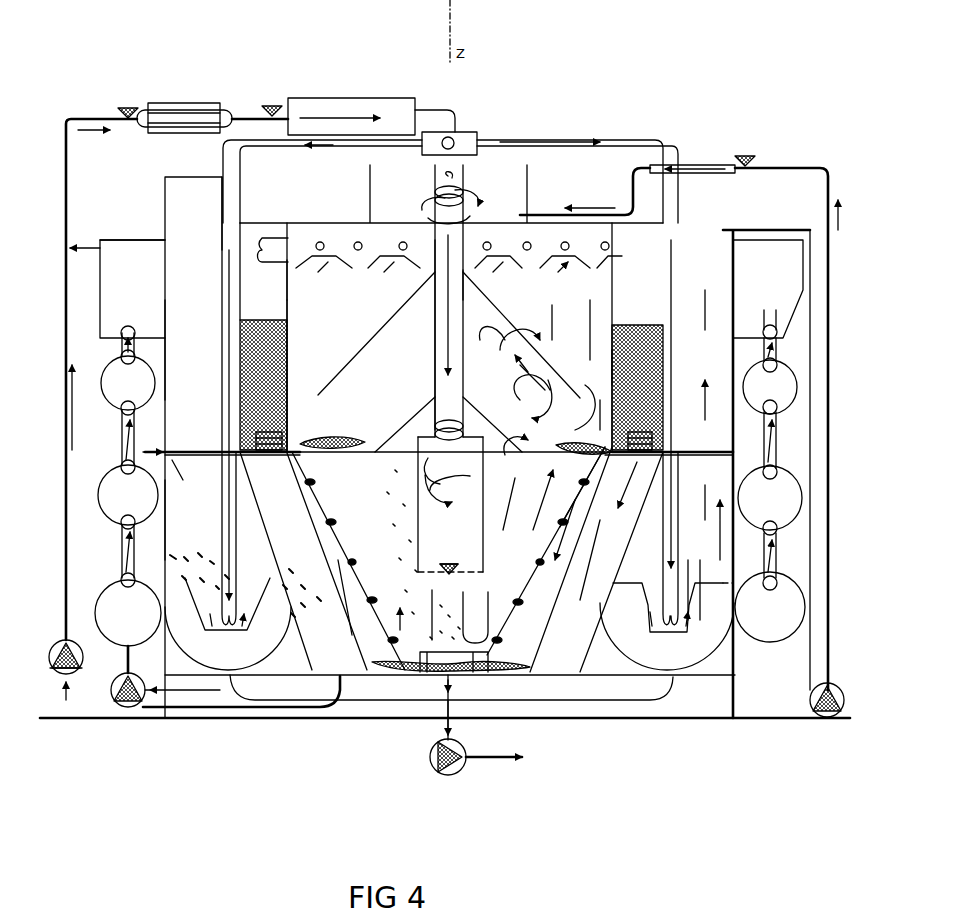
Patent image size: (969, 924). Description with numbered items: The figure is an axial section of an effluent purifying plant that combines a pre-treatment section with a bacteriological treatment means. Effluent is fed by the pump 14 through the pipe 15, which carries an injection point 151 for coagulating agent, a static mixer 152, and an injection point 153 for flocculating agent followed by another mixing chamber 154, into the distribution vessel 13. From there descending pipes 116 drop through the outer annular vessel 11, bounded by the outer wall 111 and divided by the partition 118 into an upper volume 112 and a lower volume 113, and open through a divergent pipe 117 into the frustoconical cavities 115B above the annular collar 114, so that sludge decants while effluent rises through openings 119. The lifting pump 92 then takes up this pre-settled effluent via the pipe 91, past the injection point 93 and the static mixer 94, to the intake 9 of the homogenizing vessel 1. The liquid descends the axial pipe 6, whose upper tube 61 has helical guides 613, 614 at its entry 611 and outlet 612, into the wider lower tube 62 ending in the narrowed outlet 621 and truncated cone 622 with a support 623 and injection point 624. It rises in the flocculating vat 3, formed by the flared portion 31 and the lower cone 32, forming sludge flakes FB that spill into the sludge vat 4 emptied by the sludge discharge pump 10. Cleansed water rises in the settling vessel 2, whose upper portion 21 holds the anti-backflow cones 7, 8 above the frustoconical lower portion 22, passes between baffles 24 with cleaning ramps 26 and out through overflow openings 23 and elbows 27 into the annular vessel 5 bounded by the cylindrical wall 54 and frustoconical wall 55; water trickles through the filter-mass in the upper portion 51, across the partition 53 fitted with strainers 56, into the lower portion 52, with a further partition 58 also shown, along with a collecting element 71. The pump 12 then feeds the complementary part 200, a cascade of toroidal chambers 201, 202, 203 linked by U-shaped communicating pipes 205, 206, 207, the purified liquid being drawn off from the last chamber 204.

The homogenizing vessel 1 is at (370, 180).
The settling vessel 2 is at (290, 302).
The flocculating vat 3 is at (546, 551).
The sludge vat 4 is at (456, 567).
The annular vessel 5 is at (240, 274).
The immersion pipe 6 is at (433, 350).
The fixed anti-backflow cone 7 is at (384, 440).
The adjustable anti-backflow cone 8 is at (360, 346).
The effluent intake 9 is at (826, 190).
The sludge discharge pump 10 is at (432, 760).
The outer annular vessel 11 is at (170, 302).
The pump 12 is at (116, 686).
The distribution vessel 13 is at (460, 130).
The pump 14 is at (78, 652).
The pipe 15 is at (70, 333).
The upper portion of settling vessel 21 is at (290, 324).
The lower portion of settling vessel 22 is at (322, 510).
The overflow openings 23 is at (530, 246).
The baffles 24 is at (350, 266).
The cleaning ramps 26 is at (556, 330).
The elbow 27 is at (268, 246).
The frustoconical upper portion of flocculating vat 31 is at (572, 504).
The frustoconical lower portion of flocculating vat 32 is at (516, 602).
The upper portion of annular vessel 51 is at (451, 337).
The lower portion of annular vessel 52 is at (510, 456).
The partition 53 is at (250, 455).
The cylindrical upper portion of outer wall 54 is at (240, 301).
The frustoconical lower portion of outer wall 55 is at (262, 528).
The strainers 56 is at (270, 452).
The partition plate 58 is at (637, 455).
The upper tube 61 is at (464, 280).
The lower tube 62 is at (416, 462).
The collecting cup 71 is at (488, 617).
The effluent pipe 91 is at (522, 214).
The pump 92 is at (822, 716).
The injection point 93 is at (746, 156).
The static mixer 94 is at (690, 165).
The outer wall 111 is at (168, 316).
The upper volume 112 is at (185, 350).
The lower volume 113 is at (185, 520).
The annular collar 114 is at (270, 648).
The frustoconical cavities 115B is at (228, 635).
The descending pipes 116 is at (274, 155).
The divergent pipe 117 is at (214, 596).
The partition 118 is at (176, 452).
The openings 119 is at (178, 470).
The injection point for coagulating agent 151 is at (130, 105).
The static mixer 152 is at (200, 104).
The injection point for flocculating agent 153 is at (274, 105).
The treatment unit 154 is at (328, 98).
The complementary part 200 is at (114, 232).
The toroidal chamber 201 is at (102, 606).
The toroidal chamber 202 is at (104, 492).
The toroidal chamber 203 is at (106, 395).
The last chamber 204 is at (120, 338).
The U-shaped communicating pipe 205 is at (118, 554).
The U-shaped communicating pipe 206 is at (118, 440).
The U-shaped communicating pipe 207 is at (118, 347).
The entry of upper tube 611 is at (466, 182).
The outlet of upper tube 612 is at (462, 420).
The helical guide 613 is at (438, 188).
The helical guide 614 is at (448, 446).
The narrowed outlet 621 is at (459, 617).
The truncated cone 622 is at (434, 590).
The support 623 is at (434, 572).
The injection point for flocculating agent 624 is at (452, 562).
The sludge flakes FB is at (396, 566).